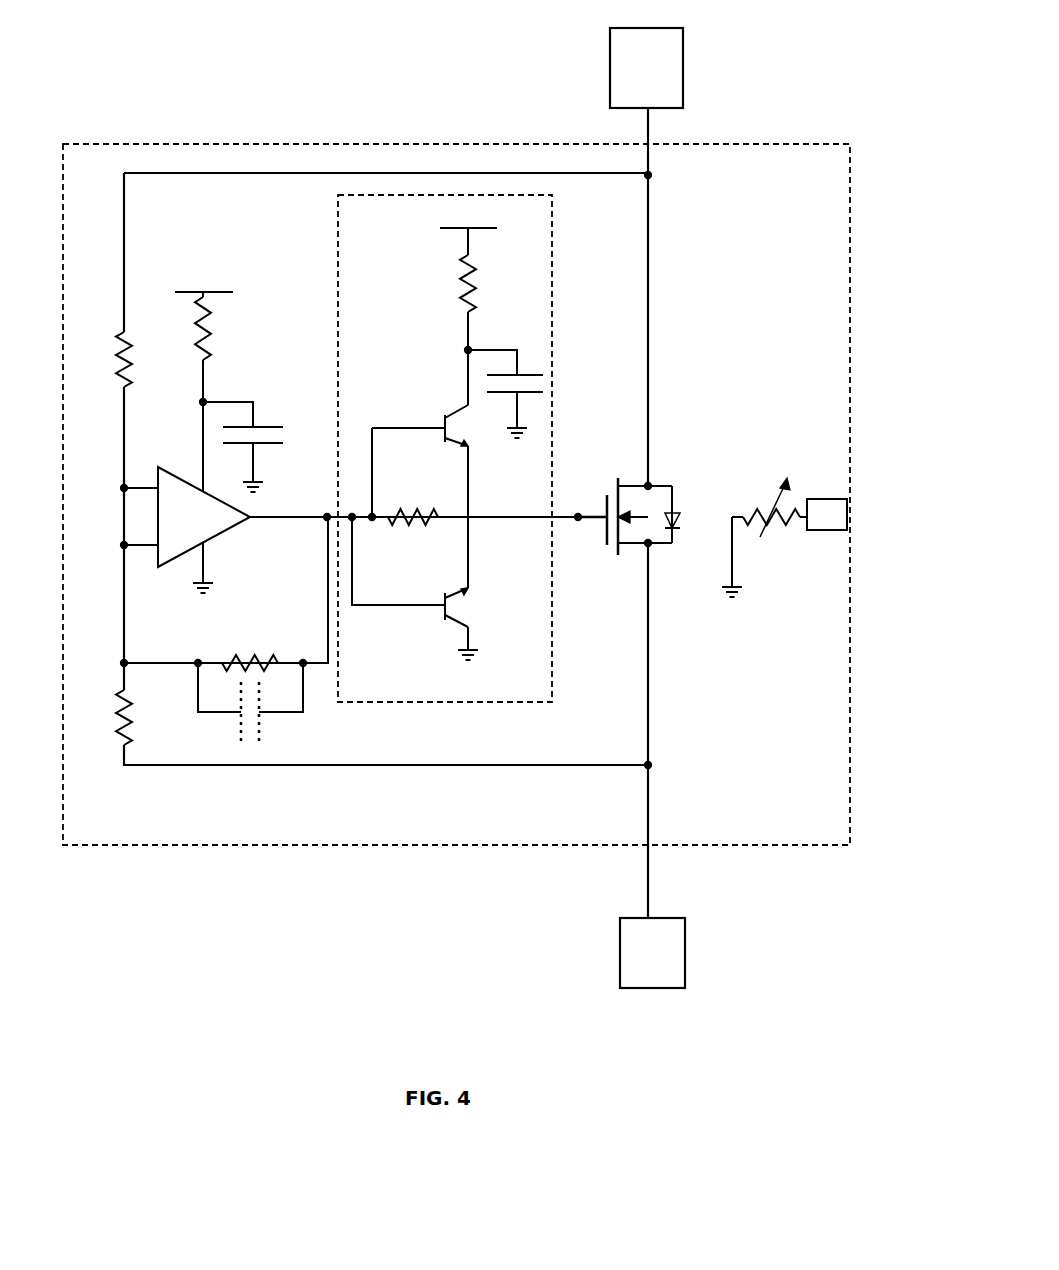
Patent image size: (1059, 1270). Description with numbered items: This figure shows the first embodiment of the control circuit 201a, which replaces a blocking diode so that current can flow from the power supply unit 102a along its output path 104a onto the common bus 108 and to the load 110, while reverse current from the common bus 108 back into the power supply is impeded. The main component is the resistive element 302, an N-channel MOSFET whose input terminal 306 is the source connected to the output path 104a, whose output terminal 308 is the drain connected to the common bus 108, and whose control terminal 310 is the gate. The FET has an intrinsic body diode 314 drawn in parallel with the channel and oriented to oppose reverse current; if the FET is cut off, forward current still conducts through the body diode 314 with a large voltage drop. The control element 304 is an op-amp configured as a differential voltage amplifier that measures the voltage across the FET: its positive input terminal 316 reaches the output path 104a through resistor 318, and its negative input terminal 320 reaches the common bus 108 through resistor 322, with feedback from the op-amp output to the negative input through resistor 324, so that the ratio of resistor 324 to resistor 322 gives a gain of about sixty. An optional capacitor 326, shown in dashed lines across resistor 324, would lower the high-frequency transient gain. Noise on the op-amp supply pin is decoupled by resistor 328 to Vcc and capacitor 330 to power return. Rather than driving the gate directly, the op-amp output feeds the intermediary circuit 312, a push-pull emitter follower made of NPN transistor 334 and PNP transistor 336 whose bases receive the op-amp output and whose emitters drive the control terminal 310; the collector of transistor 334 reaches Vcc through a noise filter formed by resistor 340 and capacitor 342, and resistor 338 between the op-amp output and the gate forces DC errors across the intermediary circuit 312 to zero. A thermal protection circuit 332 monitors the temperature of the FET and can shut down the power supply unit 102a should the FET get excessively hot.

The power supply unit 102a is at (608, 64).
The output path 104a is at (650, 118).
The common bus 108 is at (652, 892).
The load 110 is at (690, 947).
The control circuit 201a is at (492, 848).
The resistive element 302 is at (648, 500).
The control element 304 is at (213, 535).
The input terminal 306 is at (652, 484).
The output terminal 308 is at (652, 546).
The control terminal 310 is at (578, 522).
The intermediary circuit 312 is at (405, 704).
The body diode 314 is at (677, 512).
The positive input terminal 316 is at (122, 490).
The resistor 318 is at (130, 346).
The negative input terminal 320 is at (122, 543).
The resistor 322 is at (157, 722).
The resistor 324 is at (237, 653).
The capacitor 326 is at (262, 727).
The resistor 328 is at (210, 330).
The capacitor 330 is at (265, 427).
The thermal protection circuit 332 is at (783, 527).
The transistor 334 is at (458, 418).
The transistor 336 is at (458, 590).
The resistor 338 is at (405, 511).
The resistor 340 is at (462, 300).
The capacitor 342 is at (528, 375).